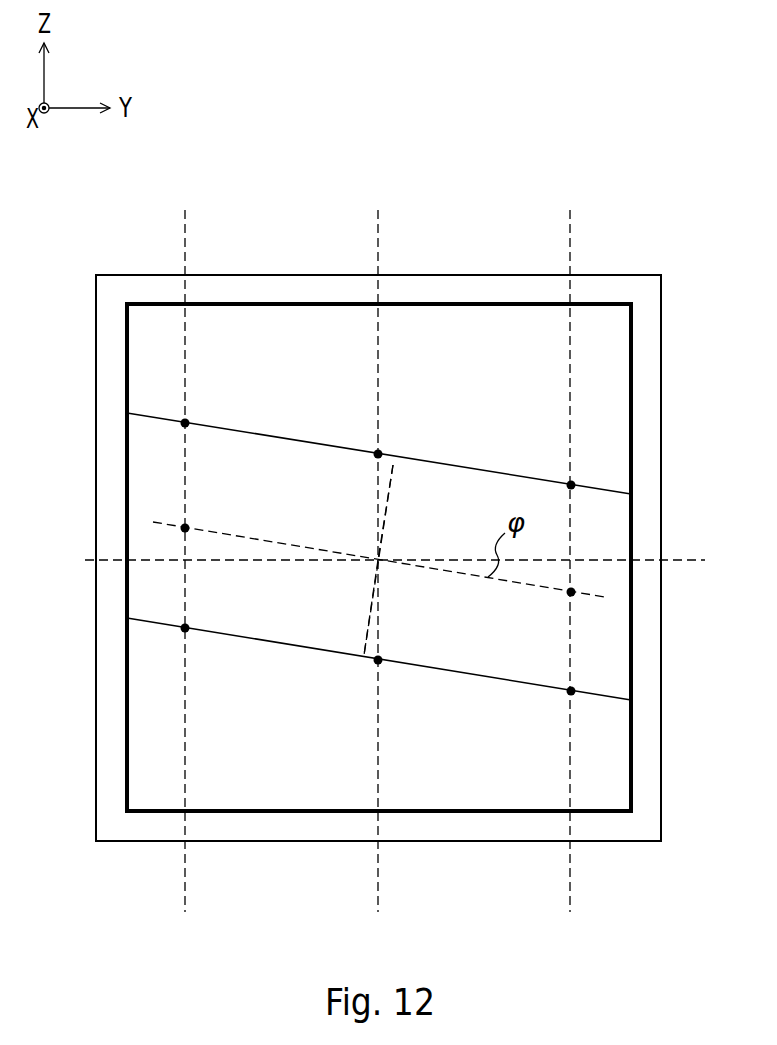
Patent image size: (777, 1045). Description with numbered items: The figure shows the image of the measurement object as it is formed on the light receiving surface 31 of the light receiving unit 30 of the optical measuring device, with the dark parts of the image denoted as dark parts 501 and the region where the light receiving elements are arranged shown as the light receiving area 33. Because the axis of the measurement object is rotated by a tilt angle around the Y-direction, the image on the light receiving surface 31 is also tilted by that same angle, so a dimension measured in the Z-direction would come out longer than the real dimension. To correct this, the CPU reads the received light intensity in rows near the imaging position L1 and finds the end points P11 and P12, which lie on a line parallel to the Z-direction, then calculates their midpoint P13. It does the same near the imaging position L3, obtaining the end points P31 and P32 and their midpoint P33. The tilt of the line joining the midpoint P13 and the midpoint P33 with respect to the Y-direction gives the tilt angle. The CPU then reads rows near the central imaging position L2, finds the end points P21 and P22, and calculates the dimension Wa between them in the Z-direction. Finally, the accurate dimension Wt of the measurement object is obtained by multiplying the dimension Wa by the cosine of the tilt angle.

The light receiving unit 30 is at (373, 429).
The light receiving surface 31 is at (636, 290).
The light receiving area 33 is at (630, 339).
The dark parts of the image 501 is at (142, 485).
The imaging position L1 is at (184, 543).
The imaging position L2 is at (377, 543).
The imaging position L3 is at (569, 543).
The end point P11 is at (205, 409).
The end point P12 is at (205, 648).
The midpoint P13 is at (205, 515).
The end point P21 is at (397, 440).
The end point P22 is at (398, 679).
The end point P31 is at (591, 471).
The end point P32 is at (592, 710).
The midpoint P33 is at (591, 578).
The dimension Wa is at (379, 492).
The accurate dimension Wt is at (371, 613).